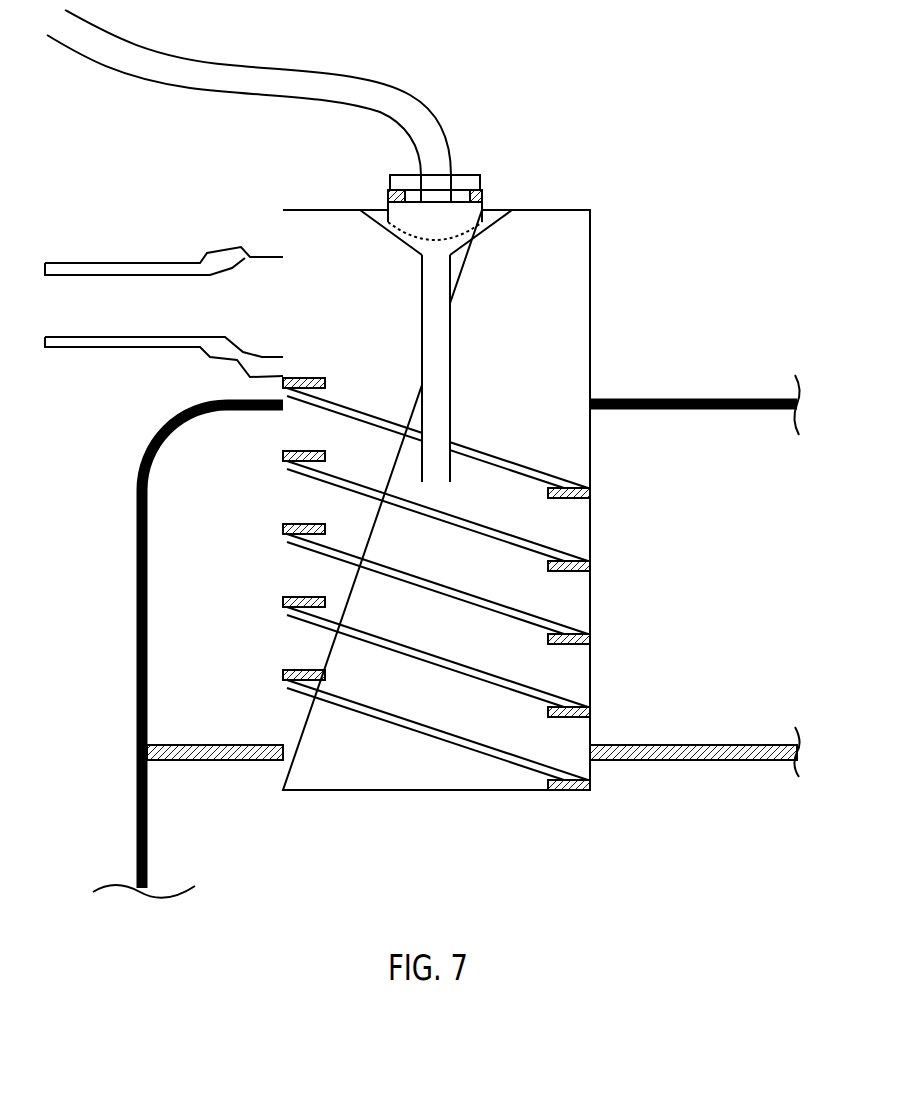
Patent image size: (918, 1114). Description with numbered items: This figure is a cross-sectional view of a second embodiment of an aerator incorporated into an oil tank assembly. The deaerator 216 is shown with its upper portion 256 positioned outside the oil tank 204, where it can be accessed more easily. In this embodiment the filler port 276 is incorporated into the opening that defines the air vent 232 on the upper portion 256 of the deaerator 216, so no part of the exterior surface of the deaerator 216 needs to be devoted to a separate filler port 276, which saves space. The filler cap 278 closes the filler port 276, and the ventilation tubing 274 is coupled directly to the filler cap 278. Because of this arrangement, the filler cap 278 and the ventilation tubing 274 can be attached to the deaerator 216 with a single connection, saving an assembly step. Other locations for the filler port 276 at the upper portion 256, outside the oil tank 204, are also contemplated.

The oil tank 204 is at (678, 399).
The deaerator 216 is at (590, 298).
The air vent 232 is at (482, 205).
The upper portion 256 is at (590, 209).
The ventilation tubing 274 is at (267, 74).
The filler port 276 is at (410, 208).
The filler cap 278 is at (465, 180).